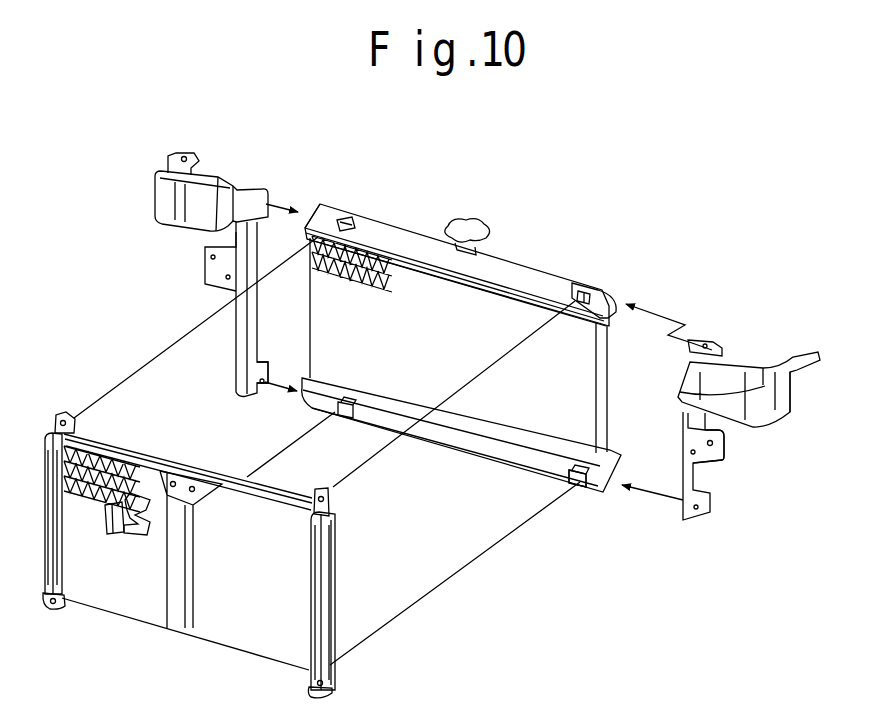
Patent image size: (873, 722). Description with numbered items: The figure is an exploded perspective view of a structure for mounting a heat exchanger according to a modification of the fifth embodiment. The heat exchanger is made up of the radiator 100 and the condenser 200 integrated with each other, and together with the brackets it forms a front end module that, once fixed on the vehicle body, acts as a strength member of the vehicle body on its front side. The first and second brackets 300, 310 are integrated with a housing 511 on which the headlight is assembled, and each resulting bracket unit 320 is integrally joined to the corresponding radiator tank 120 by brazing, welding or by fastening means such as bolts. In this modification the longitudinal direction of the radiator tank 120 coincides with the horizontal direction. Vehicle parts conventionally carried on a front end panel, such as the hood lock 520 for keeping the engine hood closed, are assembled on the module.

The radiator 100 is at (526, 268).
The radiator tank 120 is at (580, 288).
The condenser 200 is at (332, 588).
The first bracket 300 is at (168, 171).
The second bracket 310 is at (205, 267).
The bracket unit 320 is at (226, 341).
The housing 511 is at (155, 196).
The hood lock 520 is at (112, 536).